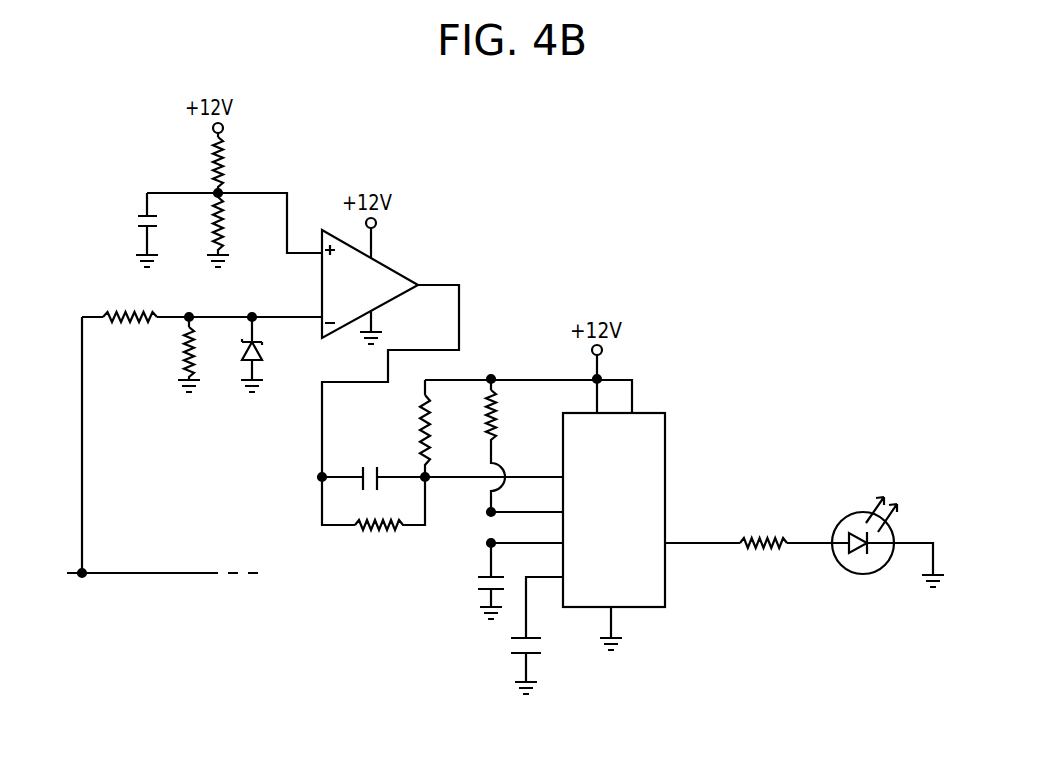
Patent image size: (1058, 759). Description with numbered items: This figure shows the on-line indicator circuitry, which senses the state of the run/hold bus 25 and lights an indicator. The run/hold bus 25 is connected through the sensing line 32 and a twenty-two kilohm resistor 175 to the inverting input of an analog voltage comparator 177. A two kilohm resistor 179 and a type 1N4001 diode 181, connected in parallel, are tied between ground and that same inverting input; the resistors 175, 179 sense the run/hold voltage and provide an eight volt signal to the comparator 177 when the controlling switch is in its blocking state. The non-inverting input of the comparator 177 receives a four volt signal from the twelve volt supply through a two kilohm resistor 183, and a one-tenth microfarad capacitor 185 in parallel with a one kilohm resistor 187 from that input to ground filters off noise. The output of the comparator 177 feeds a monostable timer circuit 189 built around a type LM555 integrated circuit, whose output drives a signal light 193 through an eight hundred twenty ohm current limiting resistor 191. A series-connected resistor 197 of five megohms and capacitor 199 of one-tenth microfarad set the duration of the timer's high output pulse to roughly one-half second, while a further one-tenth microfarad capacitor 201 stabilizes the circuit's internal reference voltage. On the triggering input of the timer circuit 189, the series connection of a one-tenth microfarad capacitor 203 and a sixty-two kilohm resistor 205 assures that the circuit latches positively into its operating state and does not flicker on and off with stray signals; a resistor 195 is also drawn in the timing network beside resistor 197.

The run/hold bus 25 is at (258, 579).
The sensing line 32 is at (83, 470).
The resistor 175 is at (128, 302).
The analog voltage comparator 177 is at (370, 286).
The resistor 179 is at (178, 364).
The diode 181 is at (266, 352).
The resistor 183 is at (207, 162).
The capacitor 185 is at (136, 223).
The resistor 187 is at (226, 223).
The monostable timer circuit 189 is at (666, 428).
The current limiting resistor 191 is at (754, 536).
The signal light 193 is at (855, 511).
The resistor 195 is at (421, 455).
The resistor 197 is at (499, 412).
The capacitor 199 is at (476, 582).
The capacitor 201 is at (543, 652).
The capacitor 203 is at (348, 483).
The resistor 205 is at (371, 532).